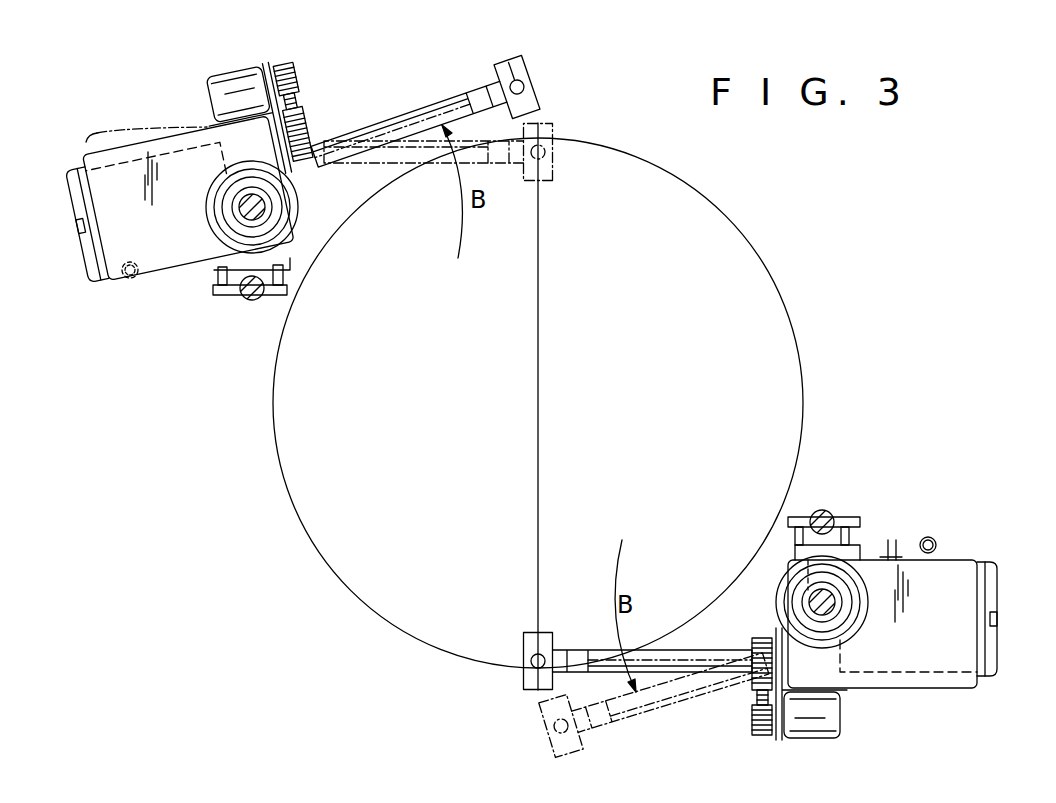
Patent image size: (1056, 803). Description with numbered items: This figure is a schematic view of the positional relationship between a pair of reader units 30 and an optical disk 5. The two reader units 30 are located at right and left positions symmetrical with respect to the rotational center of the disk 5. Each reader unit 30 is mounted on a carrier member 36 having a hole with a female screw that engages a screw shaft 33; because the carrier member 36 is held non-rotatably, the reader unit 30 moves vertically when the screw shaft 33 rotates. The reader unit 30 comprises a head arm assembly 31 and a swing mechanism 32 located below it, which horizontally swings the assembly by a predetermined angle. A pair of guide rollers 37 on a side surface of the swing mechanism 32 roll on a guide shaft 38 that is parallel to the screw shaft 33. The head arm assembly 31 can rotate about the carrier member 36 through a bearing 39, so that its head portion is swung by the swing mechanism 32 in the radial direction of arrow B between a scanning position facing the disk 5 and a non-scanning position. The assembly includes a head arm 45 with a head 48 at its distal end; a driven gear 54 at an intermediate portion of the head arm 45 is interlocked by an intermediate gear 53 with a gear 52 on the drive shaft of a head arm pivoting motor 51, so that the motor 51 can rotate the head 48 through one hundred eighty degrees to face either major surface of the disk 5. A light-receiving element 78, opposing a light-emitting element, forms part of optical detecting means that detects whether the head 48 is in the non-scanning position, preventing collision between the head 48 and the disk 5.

The optical disk 5 is at (797, 343).
The reader unit 30 is at (203, 128).
The head arm assembly 31 is at (99, 258).
The swing mechanism 32 is at (98, 140).
The screw shaft 33 is at (243, 203).
The carrier member 36 is at (835, 618).
The guide rollers 37 is at (223, 296).
The guide shaft 38 is at (246, 300).
The bearing 39 is at (224, 220).
The head arm 45 is at (405, 114).
The head 48 is at (543, 122).
The head arm pivoting motor 51 is at (218, 93).
The gear 52 is at (287, 86).
The intermediate gear 53 is at (303, 92).
The driven gear 54 is at (318, 128).
The light-receiving element 78 is at (130, 286).